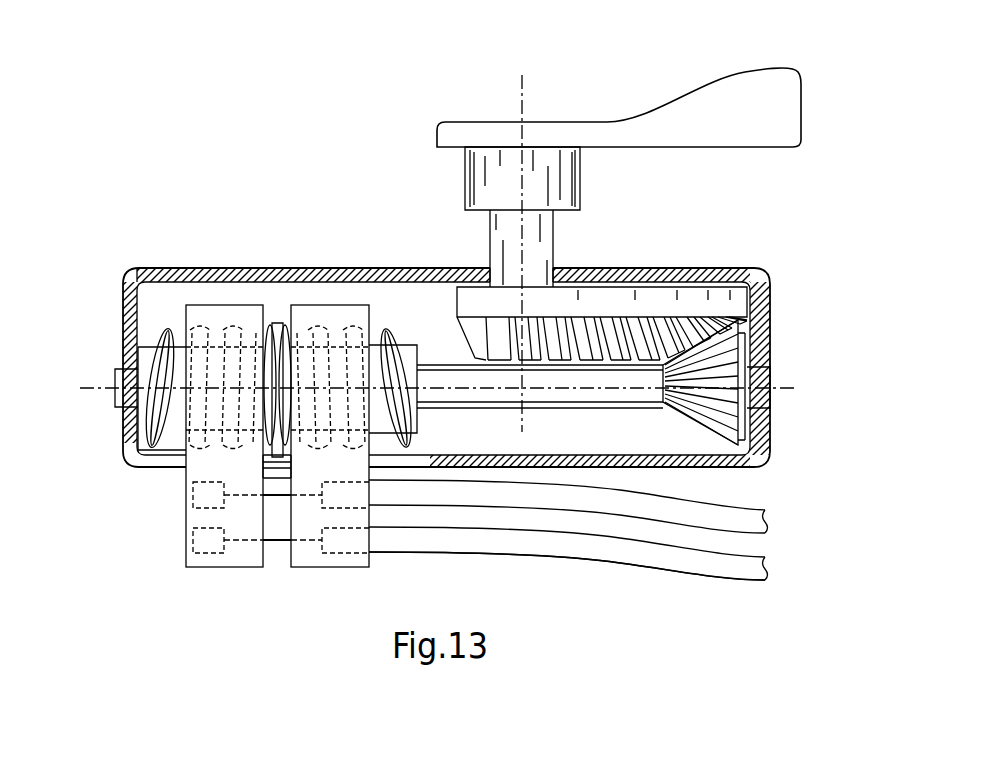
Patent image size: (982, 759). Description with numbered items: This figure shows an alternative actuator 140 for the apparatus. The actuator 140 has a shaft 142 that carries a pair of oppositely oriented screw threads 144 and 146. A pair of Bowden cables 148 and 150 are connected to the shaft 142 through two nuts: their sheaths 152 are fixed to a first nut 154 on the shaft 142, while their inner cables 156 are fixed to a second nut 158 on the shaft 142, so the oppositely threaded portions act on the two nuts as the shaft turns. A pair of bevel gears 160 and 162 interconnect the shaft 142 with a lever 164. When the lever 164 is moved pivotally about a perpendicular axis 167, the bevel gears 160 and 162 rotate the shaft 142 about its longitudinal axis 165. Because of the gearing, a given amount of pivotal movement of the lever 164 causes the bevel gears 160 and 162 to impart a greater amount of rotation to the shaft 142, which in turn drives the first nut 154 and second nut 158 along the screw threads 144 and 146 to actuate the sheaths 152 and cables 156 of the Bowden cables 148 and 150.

The actuator 140 is at (131, 226).
The shaft 142 is at (778, 384).
The screw thread 144 is at (166, 330).
The screw thread 146 is at (397, 327).
The Bowden cable 148 is at (617, 512).
The Bowden cable 150 is at (659, 565).
The sheaths 152 is at (748, 566).
The first nut 154 is at (307, 568).
The cables 156 is at (281, 540).
The second nut 158 is at (208, 568).
The bevel gear 160 is at (748, 432).
The bevel gear 162 is at (647, 305).
The lever 164 is at (621, 121).
The longitudinal axis 165 is at (78, 386).
The perpendicular axis 167 is at (518, 85).